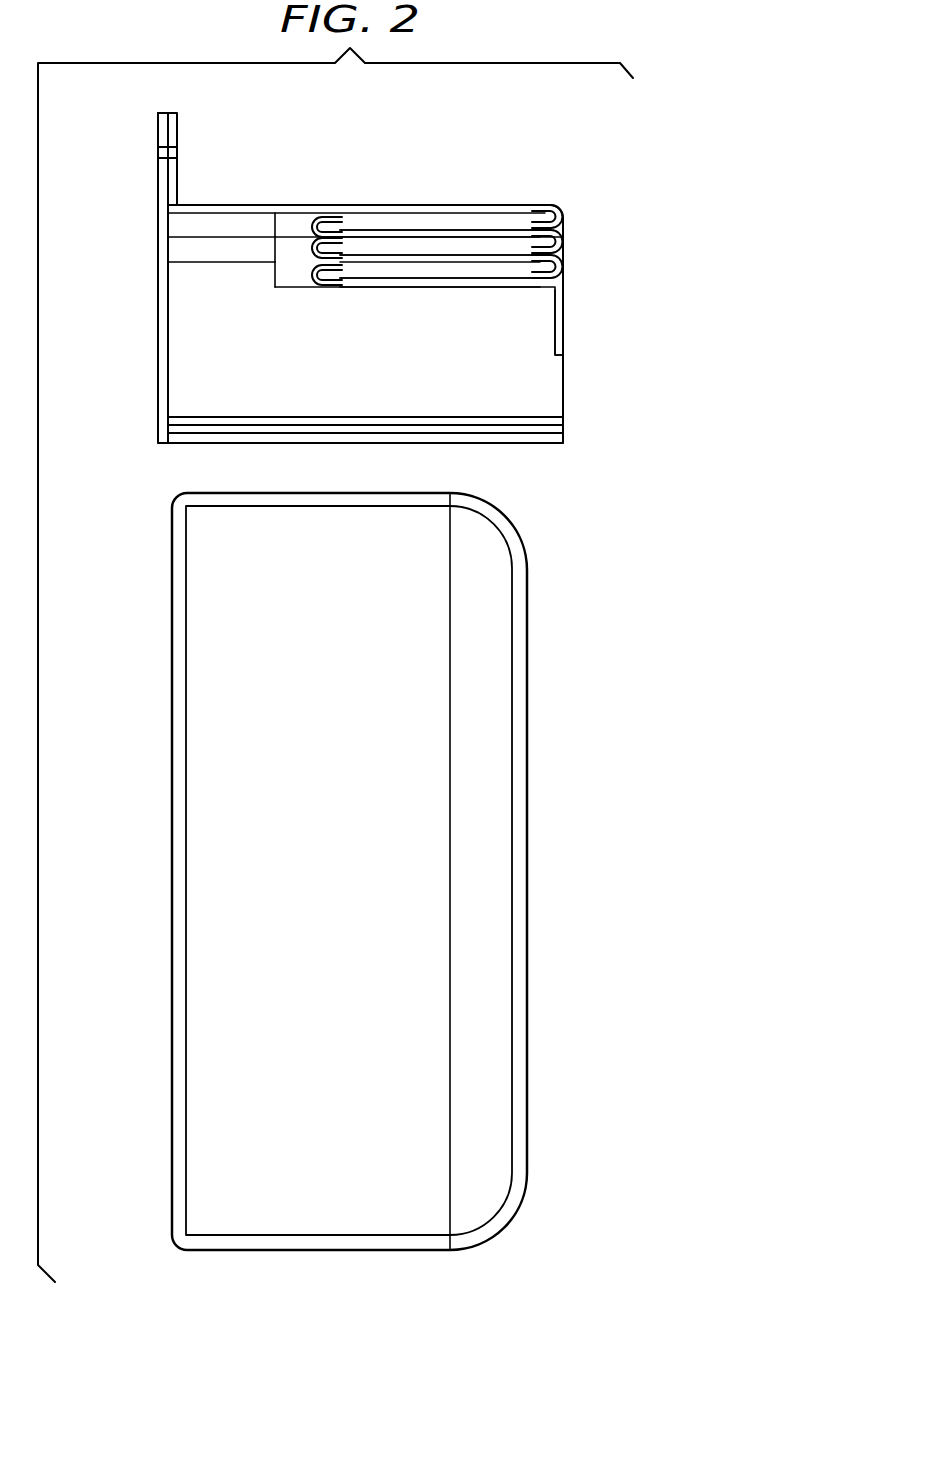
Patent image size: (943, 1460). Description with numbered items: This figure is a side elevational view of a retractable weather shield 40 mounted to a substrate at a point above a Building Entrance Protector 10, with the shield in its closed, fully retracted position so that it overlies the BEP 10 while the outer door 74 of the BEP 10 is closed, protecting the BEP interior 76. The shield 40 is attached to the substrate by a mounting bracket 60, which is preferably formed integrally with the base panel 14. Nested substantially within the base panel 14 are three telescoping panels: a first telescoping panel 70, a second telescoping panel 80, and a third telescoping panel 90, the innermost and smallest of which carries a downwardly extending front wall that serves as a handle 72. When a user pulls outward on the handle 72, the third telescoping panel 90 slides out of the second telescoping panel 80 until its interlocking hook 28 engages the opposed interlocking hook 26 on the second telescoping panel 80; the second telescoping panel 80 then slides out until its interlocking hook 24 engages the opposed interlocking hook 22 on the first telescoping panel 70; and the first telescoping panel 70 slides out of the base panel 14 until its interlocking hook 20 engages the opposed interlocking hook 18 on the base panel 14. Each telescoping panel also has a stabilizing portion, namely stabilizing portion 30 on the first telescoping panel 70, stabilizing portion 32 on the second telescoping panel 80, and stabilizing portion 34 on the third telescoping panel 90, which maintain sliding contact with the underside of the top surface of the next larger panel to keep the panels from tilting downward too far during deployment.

The Building Entrance Protector 10 is at (148, 642).
The base panel 14 is at (210, 207).
The interlocking hook 18 is at (541, 218).
The interlocking hook 20 is at (342, 216).
The interlocking hook 22 is at (535, 247).
The interlocking hook 24 is at (372, 232).
The interlocking hook 26 is at (535, 280).
The interlocking hook 28 is at (342, 274).
The stabilizing portion 30 is at (273, 222).
The stabilizing portion 32 is at (273, 247).
The stabilizing portion 34 is at (270, 277).
The retractable weather shield 40 is at (140, 245).
The mounting bracket 60 is at (173, 128).
The first telescoping panel 70 is at (432, 232).
The handle 72 is at (557, 330).
The outer door 74 is at (525, 583).
The BEP interior 76 is at (206, 758).
The second telescoping panel 80 is at (479, 261).
The third telescoping panel 90 is at (428, 285).